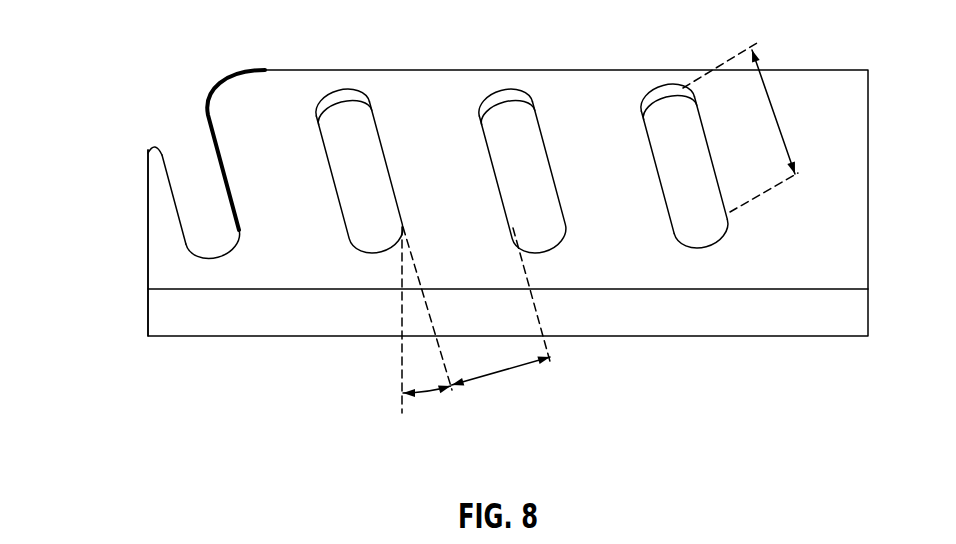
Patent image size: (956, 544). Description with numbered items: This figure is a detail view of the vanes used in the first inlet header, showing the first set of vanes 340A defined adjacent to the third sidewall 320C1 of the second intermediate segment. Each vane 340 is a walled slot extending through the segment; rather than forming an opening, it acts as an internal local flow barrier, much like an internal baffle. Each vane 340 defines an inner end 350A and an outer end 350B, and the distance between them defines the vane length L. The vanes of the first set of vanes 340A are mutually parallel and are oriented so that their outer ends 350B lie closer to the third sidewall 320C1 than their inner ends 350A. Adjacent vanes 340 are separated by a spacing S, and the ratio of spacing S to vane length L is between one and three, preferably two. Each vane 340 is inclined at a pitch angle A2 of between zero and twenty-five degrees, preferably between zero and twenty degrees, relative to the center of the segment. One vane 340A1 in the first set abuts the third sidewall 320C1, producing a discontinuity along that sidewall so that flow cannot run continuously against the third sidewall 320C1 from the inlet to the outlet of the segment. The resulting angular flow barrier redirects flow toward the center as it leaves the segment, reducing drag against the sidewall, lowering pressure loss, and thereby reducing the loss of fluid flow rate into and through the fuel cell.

The first set of vanes 340A is at (378, 70).
The vane abutting third sidewall 340A1 is at (147, 184).
The third sidewall 320C1 is at (253, 83).
The vane 340 is at (690, 78).
The outer end 350B is at (645, 98).
The inner end 350A is at (722, 243).
The vane length L is at (776, 116).
The spacing S is at (503, 372).
The pitch angle A2 is at (430, 393).